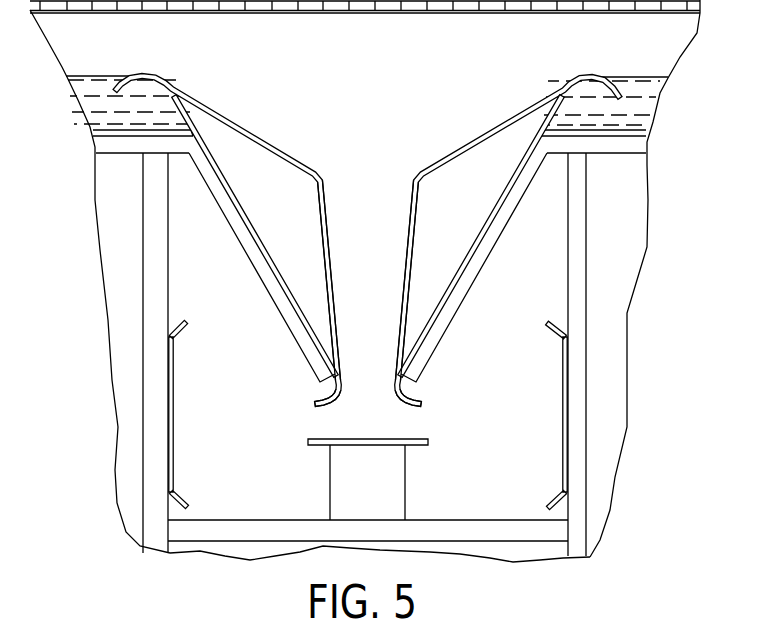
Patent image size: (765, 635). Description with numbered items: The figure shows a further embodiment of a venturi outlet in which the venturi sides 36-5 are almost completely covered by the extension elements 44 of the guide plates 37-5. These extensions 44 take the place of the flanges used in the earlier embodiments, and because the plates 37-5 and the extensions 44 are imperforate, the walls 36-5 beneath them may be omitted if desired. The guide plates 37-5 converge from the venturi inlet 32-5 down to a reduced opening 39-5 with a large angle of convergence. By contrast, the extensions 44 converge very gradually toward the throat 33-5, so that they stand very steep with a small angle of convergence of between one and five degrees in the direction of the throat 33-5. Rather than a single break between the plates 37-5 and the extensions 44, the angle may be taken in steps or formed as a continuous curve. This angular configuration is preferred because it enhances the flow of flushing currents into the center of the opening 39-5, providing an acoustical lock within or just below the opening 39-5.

The venturi inlet 32-5 is at (367, 224).
The guide plates 37-5 is at (239, 126).
The reduced opening 39-5 is at (369, 251).
The extension elements 44 is at (323, 252).
The venturi sides 36-5 is at (255, 241).
The throat 33-5 is at (395, 393).